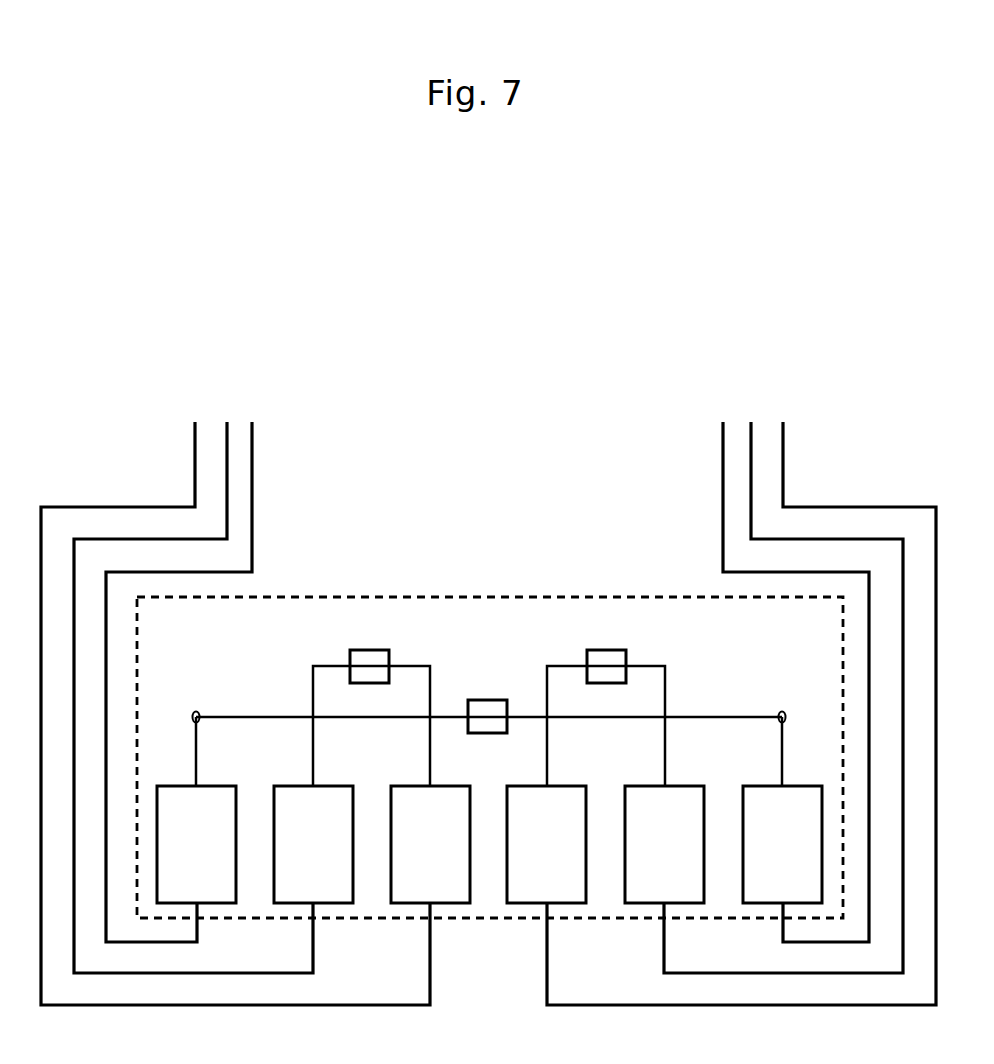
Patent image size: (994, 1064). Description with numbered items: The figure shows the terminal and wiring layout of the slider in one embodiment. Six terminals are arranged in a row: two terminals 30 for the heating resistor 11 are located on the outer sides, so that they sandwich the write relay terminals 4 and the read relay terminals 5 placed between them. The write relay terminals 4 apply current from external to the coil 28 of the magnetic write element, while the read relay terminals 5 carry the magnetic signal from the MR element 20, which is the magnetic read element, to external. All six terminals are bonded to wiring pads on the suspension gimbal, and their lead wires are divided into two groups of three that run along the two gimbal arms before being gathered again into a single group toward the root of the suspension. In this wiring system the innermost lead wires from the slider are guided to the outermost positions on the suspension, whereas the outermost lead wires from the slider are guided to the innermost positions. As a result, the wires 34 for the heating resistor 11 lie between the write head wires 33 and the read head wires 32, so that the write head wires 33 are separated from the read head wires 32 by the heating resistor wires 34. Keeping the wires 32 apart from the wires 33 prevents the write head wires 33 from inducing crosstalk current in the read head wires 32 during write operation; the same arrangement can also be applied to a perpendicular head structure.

The write relay terminals 4 is at (570, 783).
The read relay terminals 5 is at (330, 783).
The heating resistor 11 is at (486, 708).
The MR element 20 is at (370, 658).
The coil 28 is at (607, 658).
The terminals for the heating resistor 30 is at (223, 783).
The read head wires 32 is at (193, 415).
The write head wires 33 is at (749, 415).
The heating resistor wires 34 is at (252, 415).